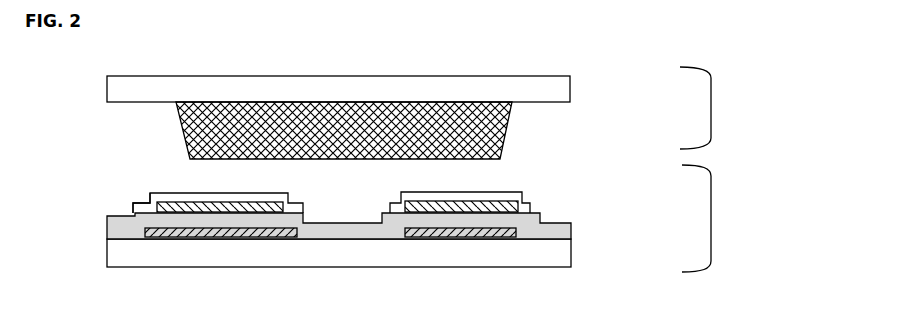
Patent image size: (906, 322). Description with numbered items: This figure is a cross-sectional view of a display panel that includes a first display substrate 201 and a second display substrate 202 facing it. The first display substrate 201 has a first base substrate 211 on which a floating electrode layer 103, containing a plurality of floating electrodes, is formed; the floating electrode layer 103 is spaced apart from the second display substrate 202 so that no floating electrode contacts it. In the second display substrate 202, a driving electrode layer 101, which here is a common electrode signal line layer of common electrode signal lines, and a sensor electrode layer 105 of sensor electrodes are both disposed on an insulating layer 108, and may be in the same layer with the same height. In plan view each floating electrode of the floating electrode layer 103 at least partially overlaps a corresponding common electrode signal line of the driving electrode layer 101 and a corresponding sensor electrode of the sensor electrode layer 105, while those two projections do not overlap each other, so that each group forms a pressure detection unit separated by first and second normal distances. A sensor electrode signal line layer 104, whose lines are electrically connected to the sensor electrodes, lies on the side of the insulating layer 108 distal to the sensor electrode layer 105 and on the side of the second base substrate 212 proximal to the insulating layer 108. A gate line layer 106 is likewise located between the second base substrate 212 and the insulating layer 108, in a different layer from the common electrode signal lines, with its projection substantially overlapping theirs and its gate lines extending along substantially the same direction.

The first display substrate 201 is at (711, 108).
The first base substrate 211 is at (560, 92).
The floating electrode layer 103 is at (483, 128).
The second display substrate 202 is at (711, 218).
The second base substrate 212 is at (557, 259).
The sensor electrode signal line layer 104 is at (557, 232).
The gate line layer 106 is at (110, 232).
The insulating layer 108 is at (560, 223).
The sensor electrode layer 105 is at (517, 205).
The driving electrode layer 101 is at (133, 205).